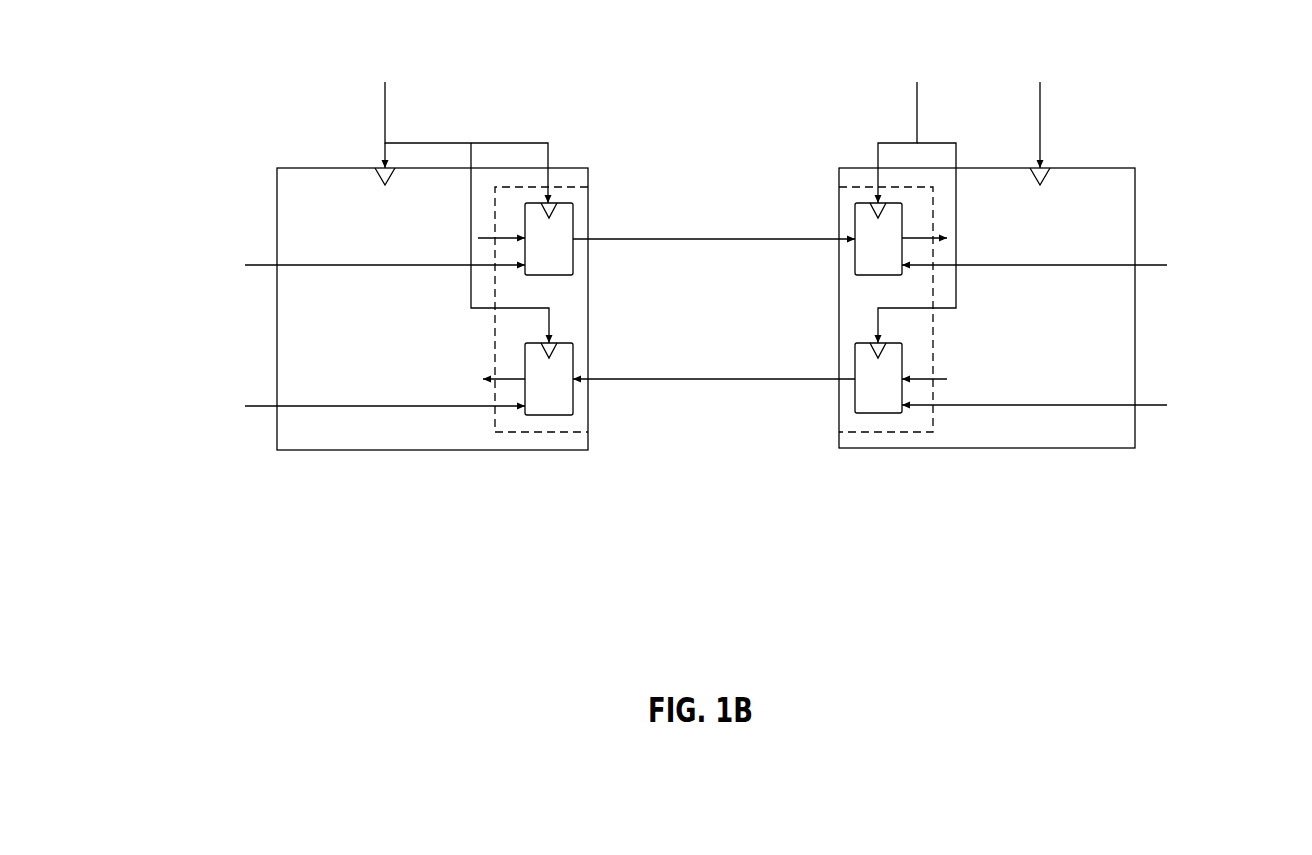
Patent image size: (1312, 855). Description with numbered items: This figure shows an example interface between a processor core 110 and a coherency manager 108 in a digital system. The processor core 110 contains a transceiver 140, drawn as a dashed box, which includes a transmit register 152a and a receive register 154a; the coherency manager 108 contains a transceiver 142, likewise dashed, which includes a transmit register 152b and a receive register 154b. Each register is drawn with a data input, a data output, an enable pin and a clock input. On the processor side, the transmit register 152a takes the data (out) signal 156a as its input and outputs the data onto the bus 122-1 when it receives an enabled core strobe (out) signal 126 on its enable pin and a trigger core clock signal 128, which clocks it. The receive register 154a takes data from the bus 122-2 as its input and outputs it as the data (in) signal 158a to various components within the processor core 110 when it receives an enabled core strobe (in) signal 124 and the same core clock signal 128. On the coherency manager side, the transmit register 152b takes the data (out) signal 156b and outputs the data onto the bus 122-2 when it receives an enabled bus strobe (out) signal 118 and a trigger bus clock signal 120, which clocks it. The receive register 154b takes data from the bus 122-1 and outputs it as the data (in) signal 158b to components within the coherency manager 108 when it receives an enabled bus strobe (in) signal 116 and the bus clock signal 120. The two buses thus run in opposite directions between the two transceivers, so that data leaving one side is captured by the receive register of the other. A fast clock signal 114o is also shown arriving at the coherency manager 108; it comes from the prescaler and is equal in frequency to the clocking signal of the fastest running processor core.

The coherency manager 108 is at (987, 308).
The processor core 110 is at (432, 309).
The fast clock signal 114o is at (1062, 68).
The bus strobe (in) signal 116 is at (1183, 240).
The bus strobe (out) signal 118 is at (1183, 381).
The bus clock signal 120 is at (917, 84).
The bus 122-1 is at (713, 241).
The bus 122-2 is at (713, 381).
The core strobe (in) signal 124 is at (245, 405).
The core strobe (out) signal 126 is at (245, 264).
The core clock signal 128 is at (385, 84).
The transceiver 140 is at (550, 465).
The transceiver 142 is at (910, 432).
The transmit register 152a is at (576, 212).
The transmit register 152b is at (855, 371).
The receive register 154a is at (576, 352).
The receive register 154b is at (855, 231).
The data (out) signal 156a is at (505, 240).
The data (out) signal 156b is at (930, 377).
The data (in) signal 158a is at (500, 380).
The data (in) signal 158b is at (940, 234).